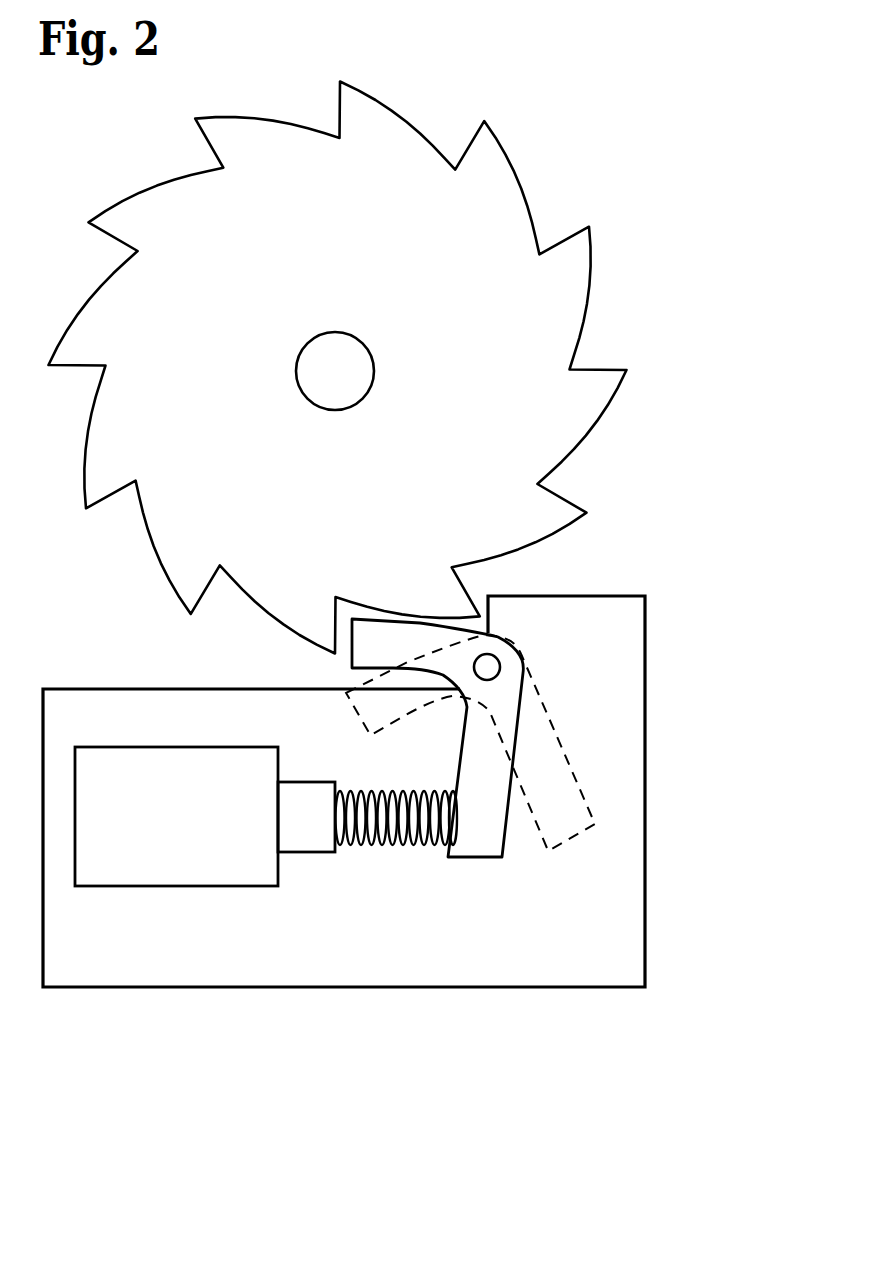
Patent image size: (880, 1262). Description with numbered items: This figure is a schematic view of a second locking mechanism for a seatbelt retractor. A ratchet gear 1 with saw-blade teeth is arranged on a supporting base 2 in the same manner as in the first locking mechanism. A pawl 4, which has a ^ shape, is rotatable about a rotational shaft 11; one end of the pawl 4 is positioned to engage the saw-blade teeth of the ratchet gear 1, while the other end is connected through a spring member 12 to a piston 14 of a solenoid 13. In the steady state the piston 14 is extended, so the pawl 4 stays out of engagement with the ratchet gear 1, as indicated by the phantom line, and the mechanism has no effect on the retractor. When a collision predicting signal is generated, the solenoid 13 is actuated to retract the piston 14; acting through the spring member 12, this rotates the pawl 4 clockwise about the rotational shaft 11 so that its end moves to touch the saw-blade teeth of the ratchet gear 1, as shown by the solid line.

The ratchet gear 1 is at (568, 285).
The supporting base 2 is at (638, 755).
The pawl 4 is at (477, 837).
The rotational shaft 11 is at (487, 667).
The spring member 12 is at (388, 843).
The solenoid 13 is at (156, 835).
The piston of the solenoid 14 is at (303, 837).